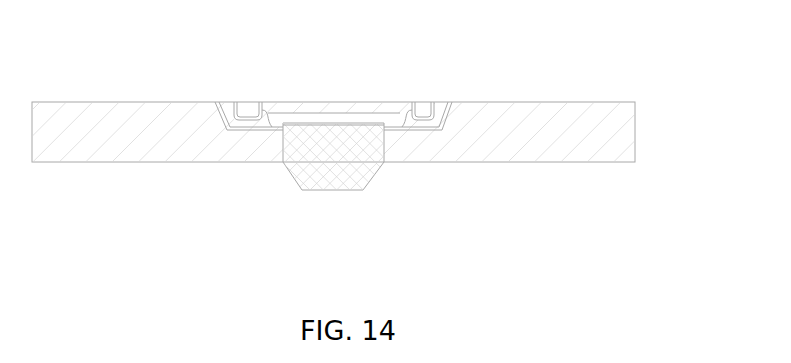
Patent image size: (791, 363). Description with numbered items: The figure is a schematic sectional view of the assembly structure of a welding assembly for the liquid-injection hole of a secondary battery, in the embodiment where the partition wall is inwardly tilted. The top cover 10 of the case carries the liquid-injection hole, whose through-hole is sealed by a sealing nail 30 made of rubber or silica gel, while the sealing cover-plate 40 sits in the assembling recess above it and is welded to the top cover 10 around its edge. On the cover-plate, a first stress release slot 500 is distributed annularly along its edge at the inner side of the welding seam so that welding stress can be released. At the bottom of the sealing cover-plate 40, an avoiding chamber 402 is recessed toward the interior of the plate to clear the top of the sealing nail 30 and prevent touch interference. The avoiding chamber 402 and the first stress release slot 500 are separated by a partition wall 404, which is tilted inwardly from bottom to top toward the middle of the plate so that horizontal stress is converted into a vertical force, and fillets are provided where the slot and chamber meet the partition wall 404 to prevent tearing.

The top cover of case 10 is at (530, 122).
The sealing nail 30 is at (352, 160).
The sealing cover-plate 40 is at (445, 115).
The avoiding chamber 402 is at (355, 122).
The partition wall 404 is at (263, 104).
The first stress release slot 500 is at (238, 106).